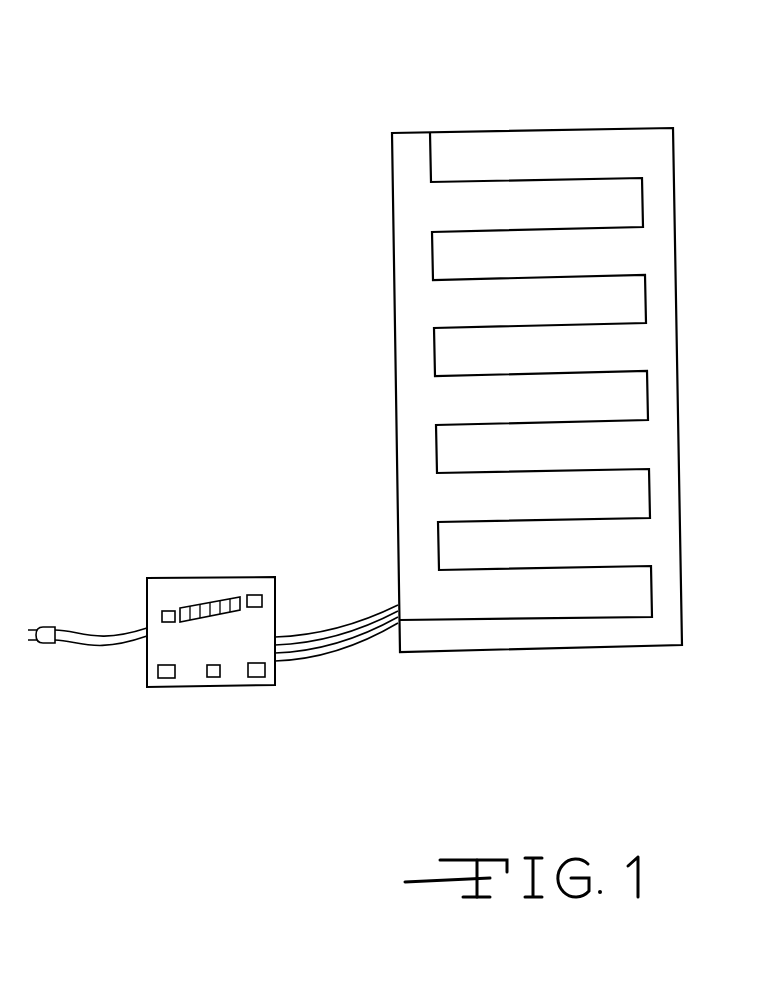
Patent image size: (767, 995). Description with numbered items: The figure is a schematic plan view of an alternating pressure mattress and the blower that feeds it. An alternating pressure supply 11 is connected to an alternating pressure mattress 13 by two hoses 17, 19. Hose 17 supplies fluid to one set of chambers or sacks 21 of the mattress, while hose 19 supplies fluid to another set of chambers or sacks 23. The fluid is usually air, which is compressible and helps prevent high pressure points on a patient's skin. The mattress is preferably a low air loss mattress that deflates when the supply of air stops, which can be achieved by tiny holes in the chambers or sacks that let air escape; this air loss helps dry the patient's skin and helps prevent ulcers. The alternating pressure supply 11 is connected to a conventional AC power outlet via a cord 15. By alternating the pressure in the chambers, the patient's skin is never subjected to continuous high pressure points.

The alternating pressure supply 11 is at (235, 577).
The alternating pressure mattress 13 is at (540, 133).
The cord 15 is at (63, 628).
The hose 17 is at (348, 658).
The hose 19 is at (370, 622).
The chambers or sacks 21 is at (660, 547).
The chambers or sacks 23 is at (417, 495).